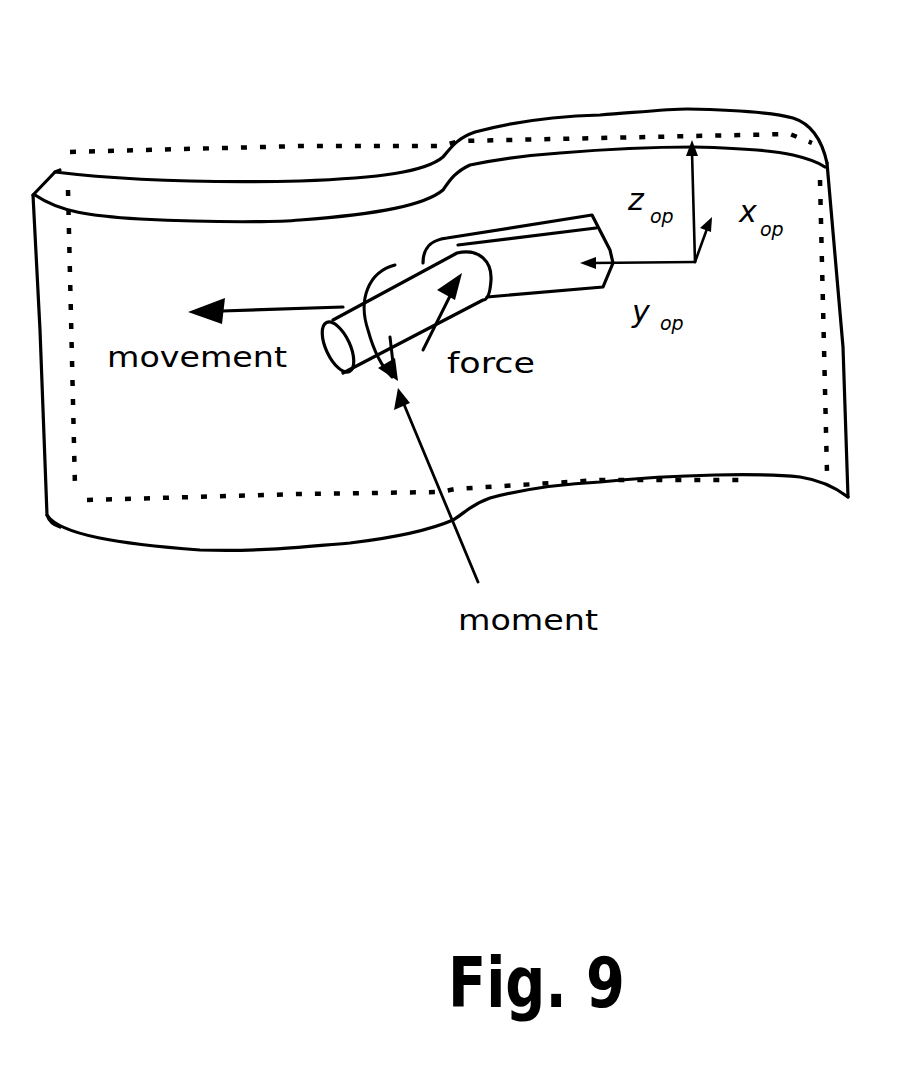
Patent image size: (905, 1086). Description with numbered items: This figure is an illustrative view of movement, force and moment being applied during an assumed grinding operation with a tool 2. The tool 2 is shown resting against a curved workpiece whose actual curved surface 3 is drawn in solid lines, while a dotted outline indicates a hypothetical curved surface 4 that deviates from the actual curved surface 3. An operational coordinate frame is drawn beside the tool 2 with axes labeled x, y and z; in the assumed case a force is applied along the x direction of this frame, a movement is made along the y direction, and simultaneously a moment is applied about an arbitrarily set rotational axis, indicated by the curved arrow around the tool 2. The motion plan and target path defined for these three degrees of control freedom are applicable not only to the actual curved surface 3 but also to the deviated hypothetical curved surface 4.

The tool 2 is at (367, 317).
The actual curved surface 3 is at (447, 317).
The hypothetical curved surface 4 is at (362, 140).